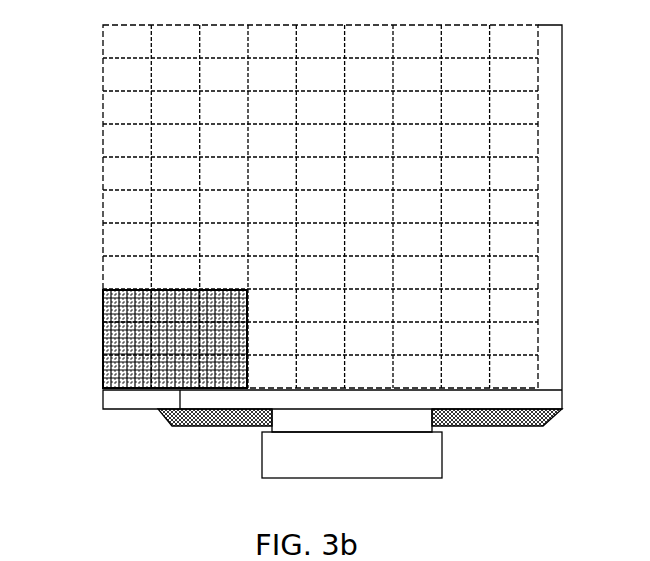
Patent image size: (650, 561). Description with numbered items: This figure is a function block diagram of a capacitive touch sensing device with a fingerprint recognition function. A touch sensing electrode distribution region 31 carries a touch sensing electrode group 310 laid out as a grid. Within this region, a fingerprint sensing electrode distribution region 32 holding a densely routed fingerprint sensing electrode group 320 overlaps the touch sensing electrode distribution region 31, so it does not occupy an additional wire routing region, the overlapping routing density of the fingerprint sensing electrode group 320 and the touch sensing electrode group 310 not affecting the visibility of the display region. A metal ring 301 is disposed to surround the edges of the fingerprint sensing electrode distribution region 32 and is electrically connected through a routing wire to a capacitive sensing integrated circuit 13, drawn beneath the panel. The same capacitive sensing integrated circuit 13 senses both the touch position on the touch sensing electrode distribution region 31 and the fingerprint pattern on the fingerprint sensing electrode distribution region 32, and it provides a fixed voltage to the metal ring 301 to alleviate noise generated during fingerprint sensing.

The touch sensing electrode distribution region 31 is at (103, 100).
The touch sensing electrode group 310 is at (118, 58).
The fingerprint sensing electrode distribution region 32 is at (103, 308).
The metal ring 301 is at (103, 335).
The fingerprint sensing electrode group 320 is at (103, 375).
The capacitive sensing integrated circuit 13 is at (437, 460).